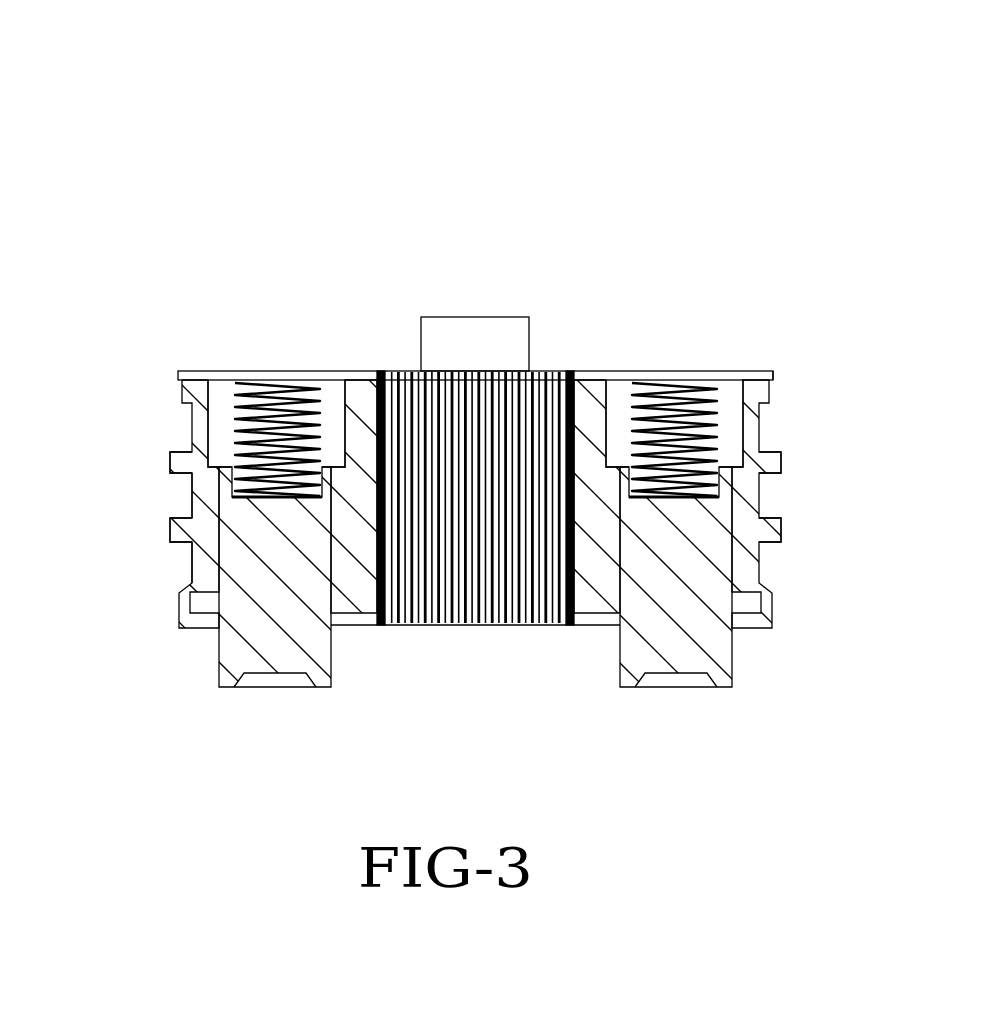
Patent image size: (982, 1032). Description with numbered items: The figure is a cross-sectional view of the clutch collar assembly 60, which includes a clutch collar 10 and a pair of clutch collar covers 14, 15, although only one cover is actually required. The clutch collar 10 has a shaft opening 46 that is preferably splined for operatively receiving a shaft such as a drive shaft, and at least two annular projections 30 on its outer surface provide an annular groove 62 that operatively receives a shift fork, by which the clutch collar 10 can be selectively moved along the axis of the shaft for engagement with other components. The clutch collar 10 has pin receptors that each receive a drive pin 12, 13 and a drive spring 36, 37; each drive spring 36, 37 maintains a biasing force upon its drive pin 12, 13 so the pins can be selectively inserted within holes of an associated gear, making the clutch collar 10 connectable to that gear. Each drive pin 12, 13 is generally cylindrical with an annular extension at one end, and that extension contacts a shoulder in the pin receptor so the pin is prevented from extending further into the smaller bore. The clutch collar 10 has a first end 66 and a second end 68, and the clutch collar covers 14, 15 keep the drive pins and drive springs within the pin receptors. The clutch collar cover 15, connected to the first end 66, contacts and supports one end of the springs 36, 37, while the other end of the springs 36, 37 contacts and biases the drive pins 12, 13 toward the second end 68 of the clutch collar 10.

The clutch collar assembly 60 is at (260, 184).
The first end 66 is at (178, 380).
The clutch collar cover 15 is at (772, 372).
The shaft opening 46 is at (473, 627).
The second end 68 is at (179, 597).
The clutch collar 10 is at (127, 562).
The annular projections 30 is at (170, 465).
The annular groove 62 is at (162, 493).
The clutch collar cover 14 is at (772, 615).
The drive pin 13 is at (240, 660).
The drive pin 12 is at (718, 667).
The drive spring 37 is at (230, 438).
The drive spring 36 is at (758, 407).